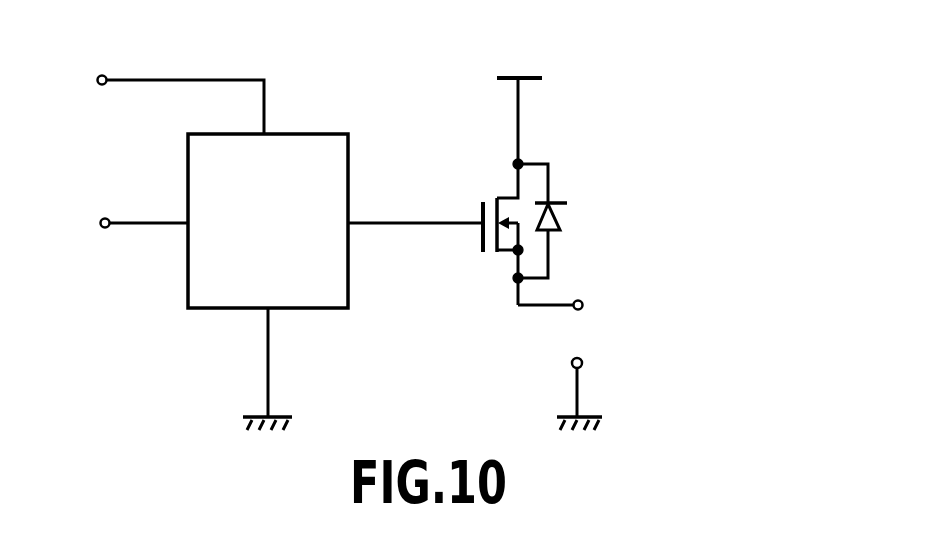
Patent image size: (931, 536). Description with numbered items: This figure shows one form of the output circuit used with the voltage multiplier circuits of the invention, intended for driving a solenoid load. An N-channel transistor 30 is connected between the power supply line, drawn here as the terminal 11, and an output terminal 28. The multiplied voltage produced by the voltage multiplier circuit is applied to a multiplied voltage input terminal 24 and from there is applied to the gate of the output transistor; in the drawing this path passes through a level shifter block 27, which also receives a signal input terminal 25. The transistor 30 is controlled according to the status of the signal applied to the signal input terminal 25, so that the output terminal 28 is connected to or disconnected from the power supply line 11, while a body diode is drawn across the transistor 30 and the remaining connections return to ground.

The supply voltage terminal 11 is at (530, 78).
The multiplied voltage input terminal 24 is at (102, 75).
The signal input terminal 25 is at (106, 218).
The level shifter 27 is at (300, 134).
The output terminal 28 is at (584, 301).
The N-channel transistor 30 is at (503, 250).